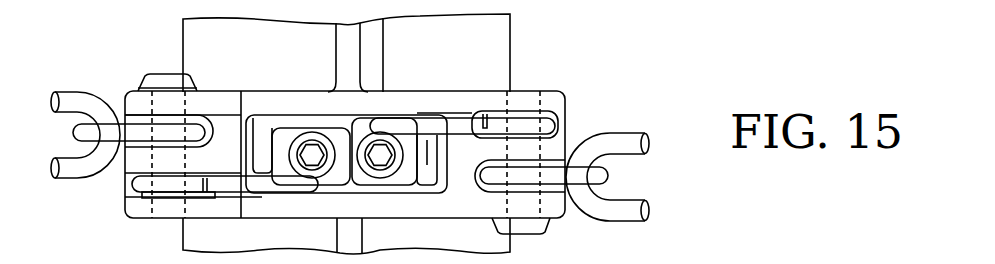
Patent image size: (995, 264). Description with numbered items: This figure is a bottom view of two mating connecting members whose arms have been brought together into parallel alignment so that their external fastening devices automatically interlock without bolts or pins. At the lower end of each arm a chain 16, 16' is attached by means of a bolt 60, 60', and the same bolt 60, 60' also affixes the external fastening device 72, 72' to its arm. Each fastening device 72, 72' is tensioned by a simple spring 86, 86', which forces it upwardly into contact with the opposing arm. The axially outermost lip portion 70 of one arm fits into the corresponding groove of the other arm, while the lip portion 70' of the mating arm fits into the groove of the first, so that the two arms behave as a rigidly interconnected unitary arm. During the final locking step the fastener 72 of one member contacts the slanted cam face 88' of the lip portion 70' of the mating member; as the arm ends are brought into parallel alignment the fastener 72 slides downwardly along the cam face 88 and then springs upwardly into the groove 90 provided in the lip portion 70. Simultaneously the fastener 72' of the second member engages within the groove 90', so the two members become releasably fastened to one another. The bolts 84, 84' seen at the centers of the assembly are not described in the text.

The chain 16 is at (620, 157).
The chain 16' is at (85, 109).
The bolt 60 is at (532, 240).
The bolt 60' is at (166, 61).
The lip portion 70 is at (259, 116).
The lip portion 70' is at (404, 182).
The external fastening device 72 is at (462, 98).
The external fastening device 72' is at (199, 196).
The bolt 84 is at (380, 189).
The bolt 84' is at (308, 189).
The spring 86 is at (537, 119).
The spring 86' is at (163, 223).
The cam face 88 is at (346, 132).
The cam face 88' is at (422, 125).
The groove 90 is at (193, 221).
The groove 90' is at (446, 88).